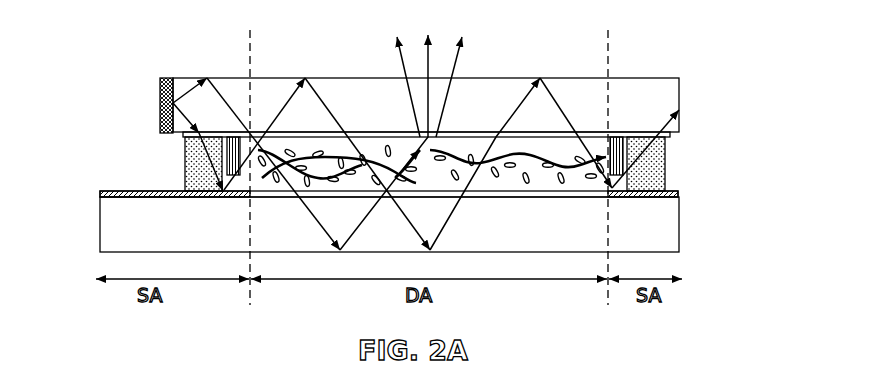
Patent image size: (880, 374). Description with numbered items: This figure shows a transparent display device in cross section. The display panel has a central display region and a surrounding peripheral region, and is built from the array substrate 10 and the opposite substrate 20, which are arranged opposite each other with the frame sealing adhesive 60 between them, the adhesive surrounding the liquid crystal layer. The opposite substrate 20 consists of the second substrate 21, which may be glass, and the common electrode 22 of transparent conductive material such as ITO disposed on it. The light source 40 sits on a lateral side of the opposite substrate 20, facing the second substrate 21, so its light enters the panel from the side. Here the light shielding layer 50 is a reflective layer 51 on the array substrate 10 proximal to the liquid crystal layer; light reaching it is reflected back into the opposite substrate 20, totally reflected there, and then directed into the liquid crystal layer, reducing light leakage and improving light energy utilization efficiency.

The array substrate 10 is at (100, 223).
The light shielding layer 50 is at (376, 178).
The reflective layer 51 is at (100, 191).
The opposite substrate 20 is at (474, 114).
The second substrate 21 is at (679, 90).
The common electrode 22 is at (670, 136).
The light source 40 is at (159, 94).
The frame sealing adhesive 60 is at (184, 152).